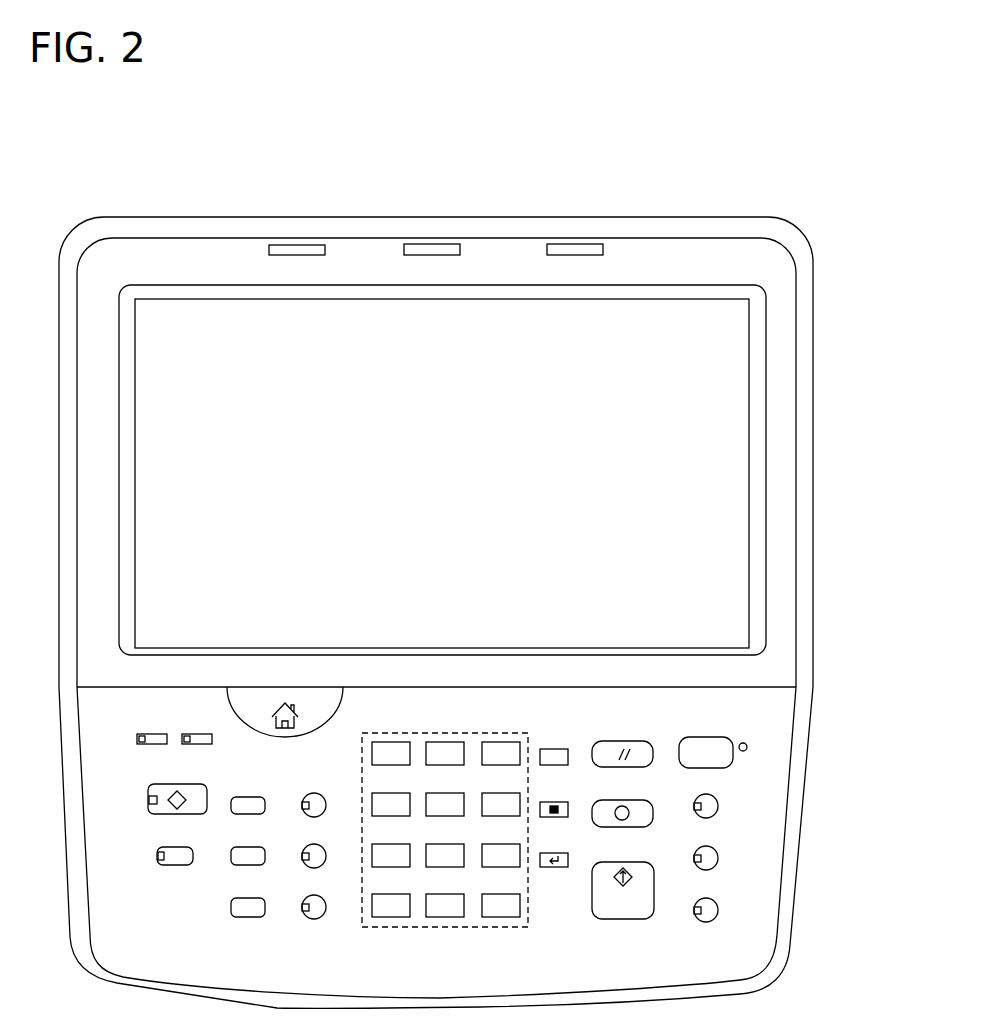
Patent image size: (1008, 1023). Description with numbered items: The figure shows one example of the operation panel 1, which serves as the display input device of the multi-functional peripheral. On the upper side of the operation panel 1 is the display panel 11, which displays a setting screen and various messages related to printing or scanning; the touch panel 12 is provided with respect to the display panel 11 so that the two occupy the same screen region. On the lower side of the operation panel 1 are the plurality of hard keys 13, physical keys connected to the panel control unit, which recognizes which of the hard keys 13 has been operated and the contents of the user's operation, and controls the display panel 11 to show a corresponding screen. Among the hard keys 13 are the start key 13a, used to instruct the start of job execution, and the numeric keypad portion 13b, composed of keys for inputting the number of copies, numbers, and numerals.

The operation panel 1 is at (796, 223).
The display panel 11 is at (738, 495).
The touch panel 12 is at (442, 473).
The hard keys 13 is at (505, 842).
The start key 13a is at (622, 907).
The numeric keypad portion 13b is at (447, 928).